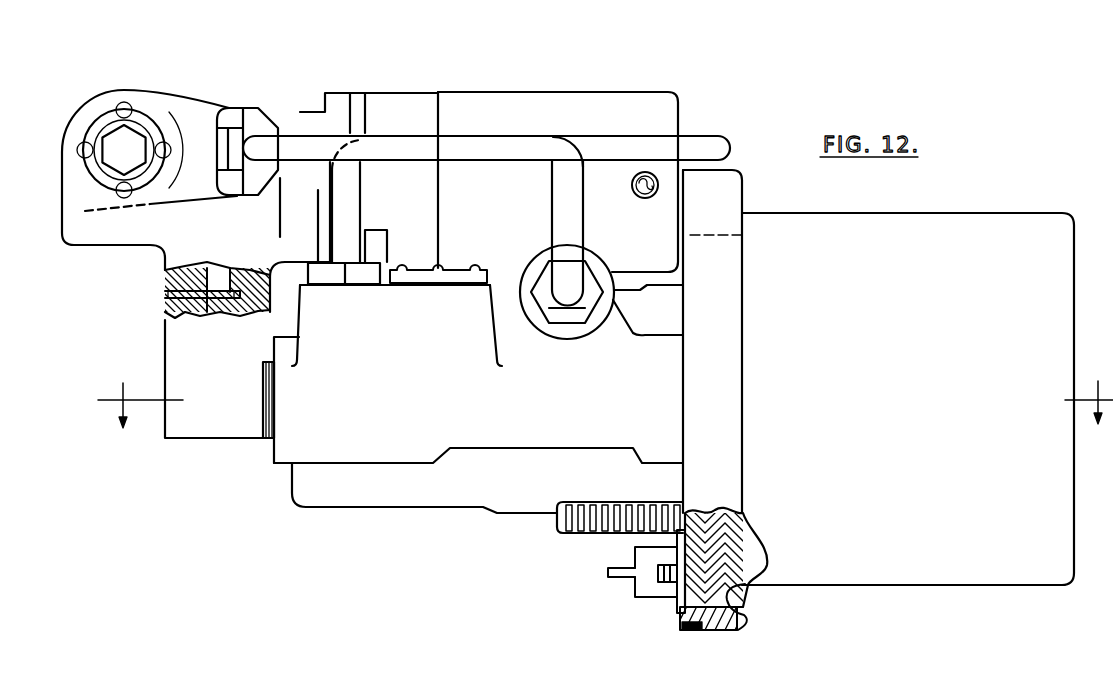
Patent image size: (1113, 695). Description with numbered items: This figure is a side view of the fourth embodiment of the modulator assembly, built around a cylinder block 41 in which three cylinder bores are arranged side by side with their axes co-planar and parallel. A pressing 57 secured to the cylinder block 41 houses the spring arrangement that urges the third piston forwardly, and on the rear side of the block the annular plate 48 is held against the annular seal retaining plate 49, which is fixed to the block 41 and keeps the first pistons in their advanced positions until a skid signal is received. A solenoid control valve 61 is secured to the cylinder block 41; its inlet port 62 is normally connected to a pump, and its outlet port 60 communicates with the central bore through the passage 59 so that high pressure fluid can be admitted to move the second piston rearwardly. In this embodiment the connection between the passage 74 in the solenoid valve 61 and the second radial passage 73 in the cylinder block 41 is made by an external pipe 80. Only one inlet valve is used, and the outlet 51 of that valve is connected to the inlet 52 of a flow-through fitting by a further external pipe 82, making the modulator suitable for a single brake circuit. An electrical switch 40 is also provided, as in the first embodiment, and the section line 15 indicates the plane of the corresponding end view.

The section line 15 is at (605, 419).
The electrical switch 40 is at (657, 593).
The cylinder block 41 is at (415, 498).
The annular plate 48 is at (744, 591).
The annular seal retaining plate 49 is at (715, 630).
The outlet 51 is at (460, 283).
The inlet 52 is at (358, 276).
The pressing 57 is at (887, 369).
The passage 59 is at (217, 305).
The outlet port 60 is at (213, 278).
The solenoid control valve 61 is at (467, 87).
The inlet port 62 is at (130, 126).
The second radial passage 73 is at (588, 320).
The passage 74 is at (257, 122).
The external pipe 80 is at (528, 150).
The external pipe 82 is at (697, 138).